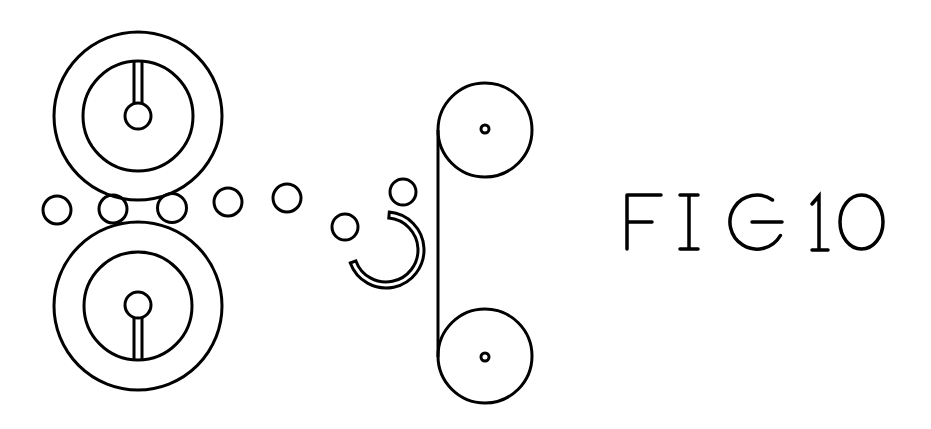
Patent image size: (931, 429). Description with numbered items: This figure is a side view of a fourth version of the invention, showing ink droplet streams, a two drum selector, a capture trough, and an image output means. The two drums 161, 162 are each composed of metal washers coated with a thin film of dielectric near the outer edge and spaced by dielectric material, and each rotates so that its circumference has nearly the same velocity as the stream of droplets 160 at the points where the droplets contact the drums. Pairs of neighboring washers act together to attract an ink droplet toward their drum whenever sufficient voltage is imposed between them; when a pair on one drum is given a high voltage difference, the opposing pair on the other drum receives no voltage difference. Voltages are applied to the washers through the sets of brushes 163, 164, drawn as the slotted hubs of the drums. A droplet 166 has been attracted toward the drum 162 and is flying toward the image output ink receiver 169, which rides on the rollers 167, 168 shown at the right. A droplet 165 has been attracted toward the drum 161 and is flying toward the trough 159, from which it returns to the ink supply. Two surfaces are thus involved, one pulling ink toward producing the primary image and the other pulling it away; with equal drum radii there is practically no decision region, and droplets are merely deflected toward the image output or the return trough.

The trough 159 is at (373, 283).
The stream of droplets 160 is at (52, 204).
The drum 161 is at (138, 306).
The drum 162 is at (188, 50).
The set of brushes 163 is at (134, 352).
The set of brushes 164 is at (133, 63).
The droplet 165 is at (341, 231).
The droplet 166 is at (403, 184).
The roller 167 is at (485, 356).
The roller 168 is at (485, 130).
The image output ink receiver 169 is at (441, 253).